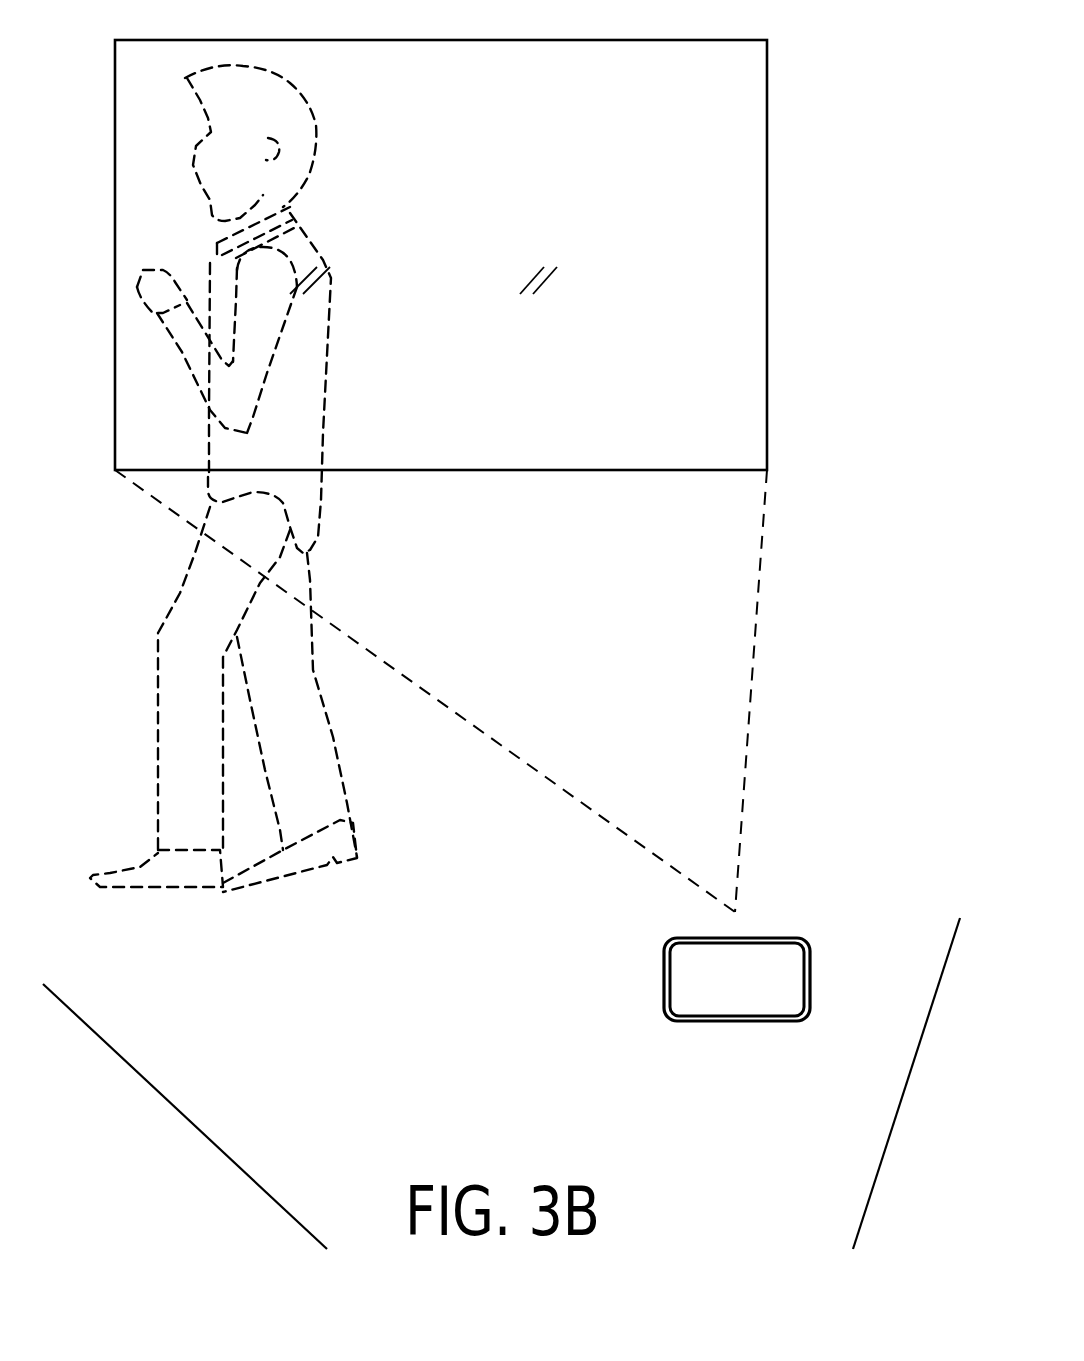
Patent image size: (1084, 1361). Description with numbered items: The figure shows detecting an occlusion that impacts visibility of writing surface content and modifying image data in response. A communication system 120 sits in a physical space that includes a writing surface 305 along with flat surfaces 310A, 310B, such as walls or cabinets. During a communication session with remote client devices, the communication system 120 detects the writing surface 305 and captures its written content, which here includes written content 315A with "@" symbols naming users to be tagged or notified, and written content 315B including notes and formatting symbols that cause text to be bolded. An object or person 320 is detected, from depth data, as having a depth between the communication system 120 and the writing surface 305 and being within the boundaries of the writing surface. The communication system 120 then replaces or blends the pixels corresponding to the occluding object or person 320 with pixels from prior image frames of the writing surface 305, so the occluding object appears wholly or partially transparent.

The writing surface 305 is at (760, 191).
The flat surface 310A is at (268, 1102).
The flat surface 310B is at (887, 1140).
The written content 315A is at (642, 70).
The written content 315B is at (290, 68).
The object or person 320 is at (167, 603).
The communication system 120 is at (805, 937).